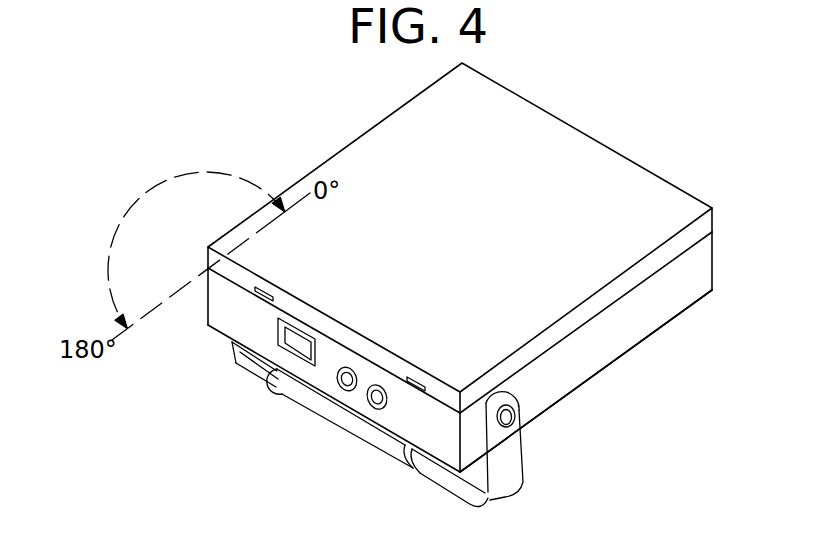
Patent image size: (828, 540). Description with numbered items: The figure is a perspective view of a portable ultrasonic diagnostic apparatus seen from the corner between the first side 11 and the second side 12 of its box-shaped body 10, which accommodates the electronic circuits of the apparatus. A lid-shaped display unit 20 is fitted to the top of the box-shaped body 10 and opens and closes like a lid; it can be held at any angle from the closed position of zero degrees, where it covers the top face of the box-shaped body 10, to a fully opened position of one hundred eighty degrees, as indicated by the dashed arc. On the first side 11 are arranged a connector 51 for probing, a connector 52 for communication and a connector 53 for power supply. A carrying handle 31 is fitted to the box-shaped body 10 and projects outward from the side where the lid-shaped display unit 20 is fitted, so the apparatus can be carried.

The box-shaped body 10 is at (300, 147).
The lid-shaped display unit 20 is at (600, 127).
The first side 11 is at (226, 303).
The second side 12 is at (625, 328).
The connector for probing 51 is at (296, 342).
The connector for communication 52 is at (342, 386).
The connector for power supply 53 is at (376, 404).
The carrying handle 31 is at (546, 466).